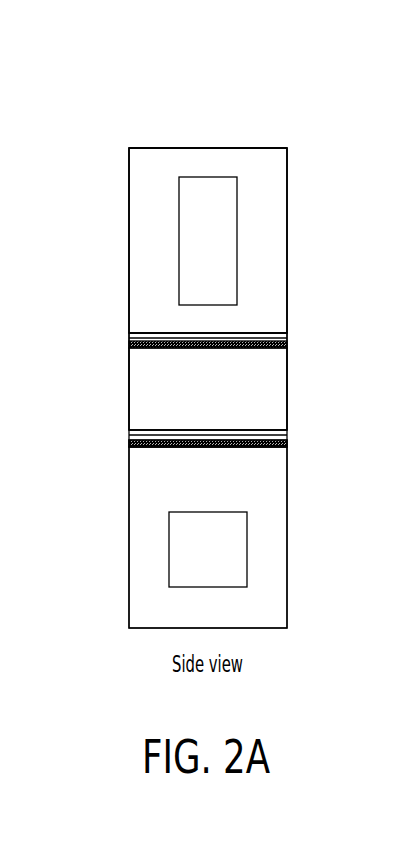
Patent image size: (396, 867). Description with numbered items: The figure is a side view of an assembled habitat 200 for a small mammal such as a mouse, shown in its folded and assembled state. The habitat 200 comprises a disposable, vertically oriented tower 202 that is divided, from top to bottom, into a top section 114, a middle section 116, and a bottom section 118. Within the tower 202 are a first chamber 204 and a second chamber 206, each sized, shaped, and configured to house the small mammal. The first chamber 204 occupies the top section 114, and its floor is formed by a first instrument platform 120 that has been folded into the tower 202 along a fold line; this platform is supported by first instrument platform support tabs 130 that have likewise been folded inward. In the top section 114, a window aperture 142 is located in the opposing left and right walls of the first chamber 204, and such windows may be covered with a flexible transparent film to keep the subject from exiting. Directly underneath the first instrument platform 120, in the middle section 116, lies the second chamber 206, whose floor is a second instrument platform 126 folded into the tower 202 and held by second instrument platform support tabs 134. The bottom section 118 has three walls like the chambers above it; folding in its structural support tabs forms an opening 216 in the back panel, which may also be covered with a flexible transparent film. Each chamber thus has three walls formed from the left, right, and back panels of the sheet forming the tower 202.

The habitat 200 is at (304, 131).
The tower 202 is at (145, 152).
The first chamber 204 is at (265, 238).
The top section 114 is at (114, 227).
The middle section 116 is at (114, 393).
The bottom section 118 is at (114, 550).
The first instrument platform 120 is at (245, 338).
The first instrument platform support tabs 130 is at (280, 348).
The second chamber 206 is at (264, 372).
The second instrument platform 126 is at (263, 442).
The second instrument platform support tabs 134 is at (155, 447).
The window aperture 142 is at (223, 258).
The opening 216 is at (223, 562).